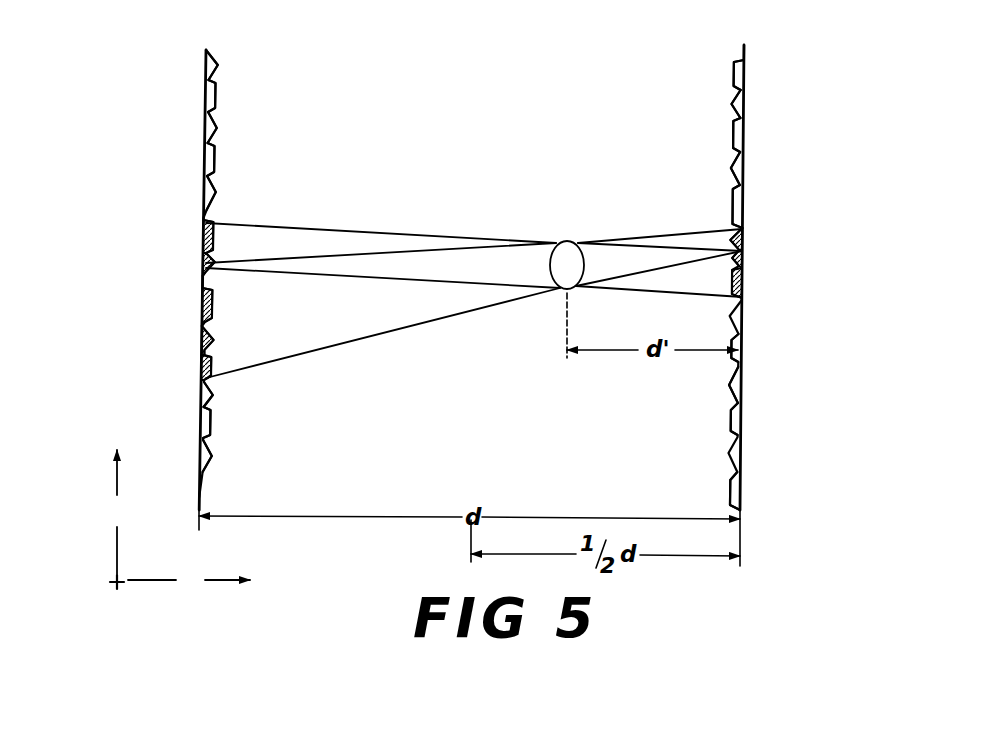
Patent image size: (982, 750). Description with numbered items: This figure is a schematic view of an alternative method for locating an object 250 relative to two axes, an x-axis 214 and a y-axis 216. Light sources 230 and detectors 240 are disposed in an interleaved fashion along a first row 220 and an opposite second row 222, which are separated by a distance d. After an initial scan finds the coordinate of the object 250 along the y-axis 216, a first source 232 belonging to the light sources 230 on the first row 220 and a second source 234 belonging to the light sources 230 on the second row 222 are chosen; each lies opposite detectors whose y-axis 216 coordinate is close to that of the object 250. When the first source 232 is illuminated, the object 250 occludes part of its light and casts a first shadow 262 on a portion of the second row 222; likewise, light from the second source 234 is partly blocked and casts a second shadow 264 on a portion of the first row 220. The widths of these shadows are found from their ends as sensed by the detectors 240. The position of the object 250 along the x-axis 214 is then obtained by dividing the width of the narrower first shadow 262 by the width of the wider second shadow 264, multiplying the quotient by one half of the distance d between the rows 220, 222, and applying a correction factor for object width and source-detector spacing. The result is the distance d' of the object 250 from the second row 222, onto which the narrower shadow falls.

The first row 220 is at (206, 50).
The second row 222 is at (744, 56).
The light sources 230 is at (216, 63).
The detectors 240 is at (215, 96).
The first source 232 is at (214, 262).
The second source 234 is at (734, 258).
The object 250 is at (568, 262).
The first shadow 262 is at (748, 226).
The second shadow 264 is at (202, 222).
The y-axis 216 is at (117, 552).
The x-axis 214 is at (147, 582).